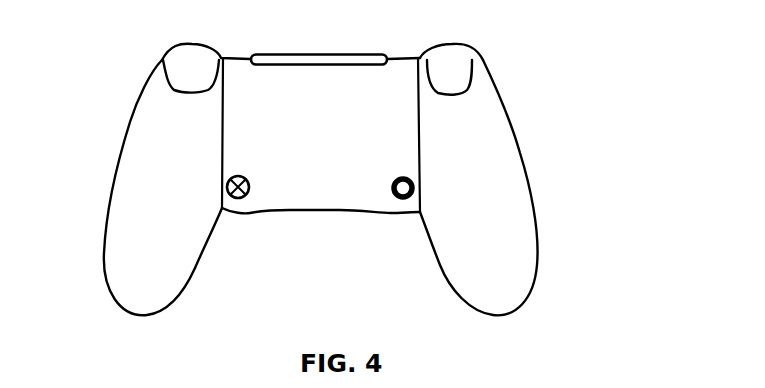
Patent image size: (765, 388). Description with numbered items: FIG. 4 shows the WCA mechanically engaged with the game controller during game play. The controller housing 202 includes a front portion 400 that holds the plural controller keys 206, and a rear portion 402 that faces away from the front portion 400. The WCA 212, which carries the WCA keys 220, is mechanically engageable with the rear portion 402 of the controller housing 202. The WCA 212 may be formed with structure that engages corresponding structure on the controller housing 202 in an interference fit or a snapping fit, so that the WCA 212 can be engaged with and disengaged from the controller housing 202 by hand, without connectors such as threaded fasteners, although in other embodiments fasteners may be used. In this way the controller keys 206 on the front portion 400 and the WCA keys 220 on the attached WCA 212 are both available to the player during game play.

The front portion 400 is at (311, 167).
The controller housing 202 is at (364, 167).
The controller keys 206 is at (472, 50).
The rear portion 402 is at (497, 155).
The WCA 212 is at (337, 170).
The WCA keys 220 is at (250, 213).